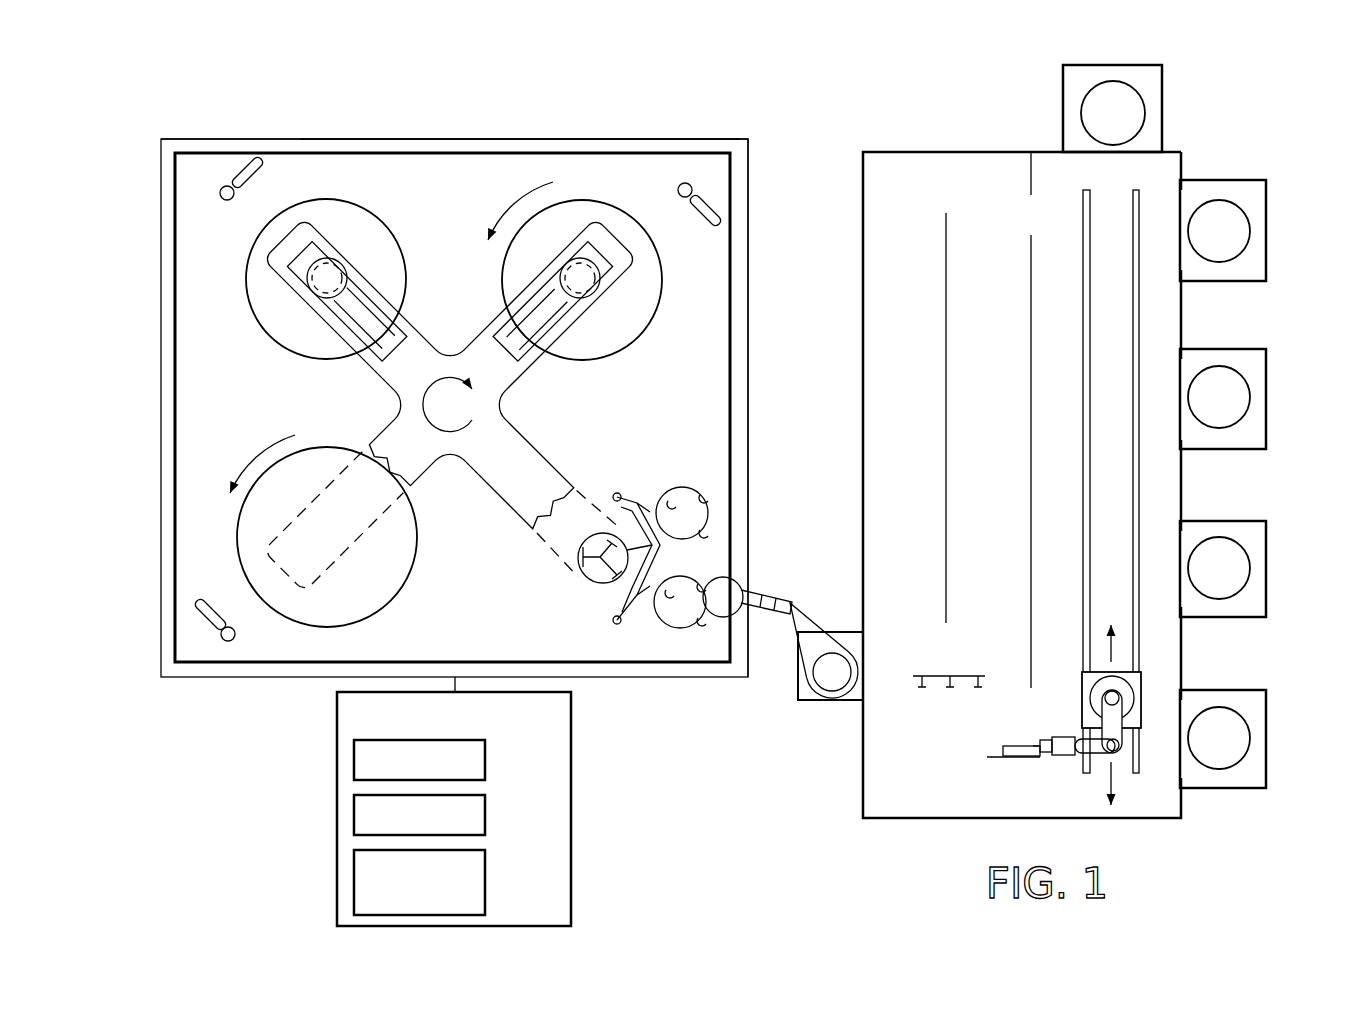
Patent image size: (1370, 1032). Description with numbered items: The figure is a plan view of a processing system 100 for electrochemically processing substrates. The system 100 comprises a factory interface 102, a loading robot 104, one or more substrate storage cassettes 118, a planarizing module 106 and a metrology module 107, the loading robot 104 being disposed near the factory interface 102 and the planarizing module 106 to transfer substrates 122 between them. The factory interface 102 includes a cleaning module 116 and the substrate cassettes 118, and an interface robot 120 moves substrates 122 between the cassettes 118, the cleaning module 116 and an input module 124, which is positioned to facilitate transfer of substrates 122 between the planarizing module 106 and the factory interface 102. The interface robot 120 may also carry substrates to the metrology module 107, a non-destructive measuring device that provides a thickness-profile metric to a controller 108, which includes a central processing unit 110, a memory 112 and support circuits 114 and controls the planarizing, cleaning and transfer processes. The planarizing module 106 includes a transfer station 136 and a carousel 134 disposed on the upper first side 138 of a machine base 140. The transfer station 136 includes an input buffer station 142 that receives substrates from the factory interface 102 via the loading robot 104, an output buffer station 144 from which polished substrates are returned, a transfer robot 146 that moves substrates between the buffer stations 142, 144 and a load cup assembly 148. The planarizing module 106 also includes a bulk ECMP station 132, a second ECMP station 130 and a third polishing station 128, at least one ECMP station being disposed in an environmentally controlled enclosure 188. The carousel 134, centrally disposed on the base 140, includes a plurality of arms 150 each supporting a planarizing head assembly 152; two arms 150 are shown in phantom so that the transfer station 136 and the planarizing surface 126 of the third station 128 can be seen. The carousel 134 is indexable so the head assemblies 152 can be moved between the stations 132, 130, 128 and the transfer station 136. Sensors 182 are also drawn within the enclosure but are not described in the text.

The processing system 100 is at (222, 762).
The factory interface 102 is at (842, 820).
The loading robot 104 is at (818, 702).
The planarizing module 106 is at (210, 655).
The metrology module 107 is at (1148, 70).
The controller 108 is at (571, 853).
The central processing unit 110 is at (485, 760).
The memory 112 is at (485, 815).
The support circuits 114 is at (485, 878).
The cleaning module 116 is at (903, 418).
The substrate storage cassettes 118 is at (1268, 259).
The interface robot 120 is at (1128, 690).
The substrates 122 is at (1240, 221).
The input module 124 is at (918, 675).
The planarizing surface 126 is at (347, 588).
The third polishing station 128 is at (465, 600).
The second ECMP station 130 is at (299, 212).
The bulk ECMP station 132 is at (664, 234).
The carousel 134 is at (510, 373).
The transfer station 136 is at (552, 628).
The first side 138 is at (188, 641).
The machine base 140 is at (172, 432).
The input buffer station 142 is at (676, 622).
The output buffer station 144 is at (684, 489).
The transfer robot 146 is at (653, 555).
The load cup assembly 148 is at (596, 578).
The arms 150 is at (448, 358).
The planarizing head assembly 152 is at (340, 256).
The sensor 182 is at (228, 186).
The environmentally controlled enclosure 188 is at (528, 138).